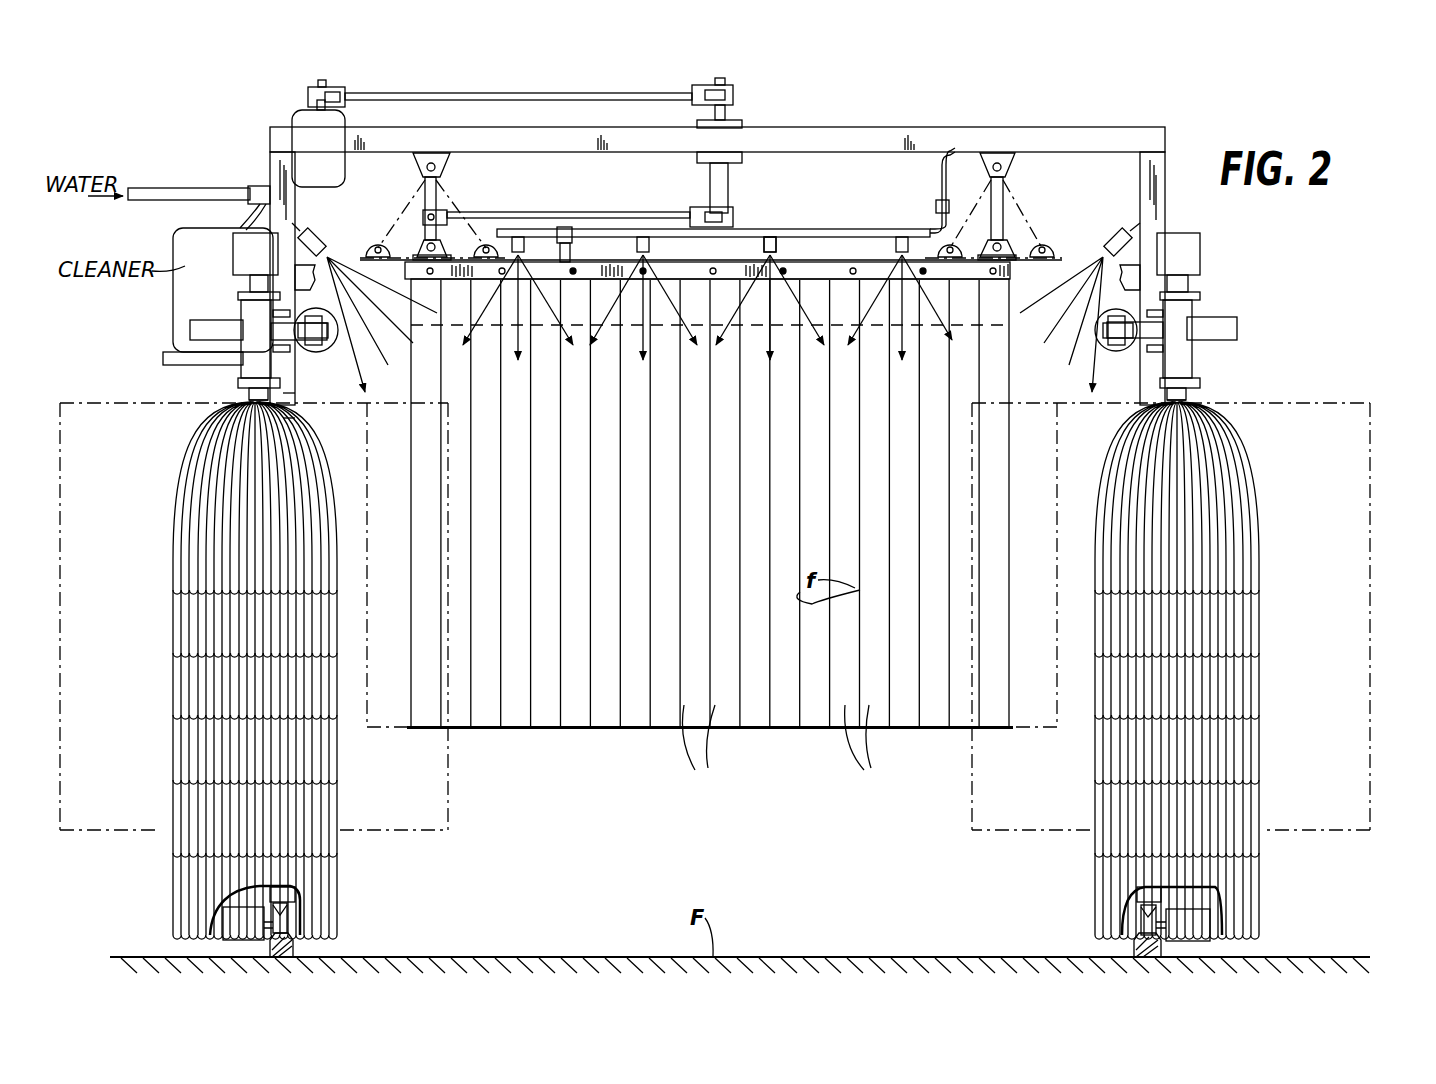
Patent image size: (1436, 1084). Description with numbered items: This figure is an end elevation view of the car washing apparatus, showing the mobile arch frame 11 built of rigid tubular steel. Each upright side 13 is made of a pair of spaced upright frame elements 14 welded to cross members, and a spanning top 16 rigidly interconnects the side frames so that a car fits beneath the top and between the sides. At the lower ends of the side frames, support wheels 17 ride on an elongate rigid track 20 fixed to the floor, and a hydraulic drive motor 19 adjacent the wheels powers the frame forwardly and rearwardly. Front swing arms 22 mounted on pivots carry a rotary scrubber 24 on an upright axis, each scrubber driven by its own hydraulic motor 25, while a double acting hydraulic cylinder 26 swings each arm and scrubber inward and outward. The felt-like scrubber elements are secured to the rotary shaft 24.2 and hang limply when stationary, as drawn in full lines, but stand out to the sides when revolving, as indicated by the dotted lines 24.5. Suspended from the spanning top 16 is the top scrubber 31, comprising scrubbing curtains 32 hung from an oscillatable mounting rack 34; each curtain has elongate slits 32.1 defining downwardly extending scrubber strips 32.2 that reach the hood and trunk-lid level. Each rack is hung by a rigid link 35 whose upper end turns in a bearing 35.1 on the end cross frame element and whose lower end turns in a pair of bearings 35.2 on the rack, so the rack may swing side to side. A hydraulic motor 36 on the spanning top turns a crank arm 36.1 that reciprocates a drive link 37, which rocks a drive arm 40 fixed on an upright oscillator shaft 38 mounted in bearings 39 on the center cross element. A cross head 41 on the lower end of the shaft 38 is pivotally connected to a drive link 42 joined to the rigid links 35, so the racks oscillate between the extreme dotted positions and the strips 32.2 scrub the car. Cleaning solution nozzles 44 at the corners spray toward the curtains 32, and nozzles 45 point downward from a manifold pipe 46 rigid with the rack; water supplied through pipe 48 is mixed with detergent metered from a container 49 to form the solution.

The mobile arch frame 11 is at (1148, 124).
The upright side 13 is at (287, 395).
The upright frame element 14 is at (290, 420).
The spanning top 16 is at (905, 127).
The support wheel 17 is at (290, 922).
The hydraulic drive motor 19 is at (225, 919).
The elongate rigid track 20 is at (295, 955).
The front swing arm 22 is at (200, 331).
The rotary scrubber 24 is at (190, 466).
The rotary shaft 24.2 is at (250, 398).
The dotted lines 24.5 is at (1375, 426).
The hydraulic motor 25 is at (232, 250).
The double acting hydraulic cylinder 26 is at (318, 347).
The top scrubber 31 is at (1017, 450).
The scrubbing curtain 32 is at (726, 288).
The elongate slit 32.1 is at (717, 743).
The scrubber strip 32.2 is at (883, 743).
The oscillatable mounting rack 34 is at (825, 270).
The rigid link 35 is at (437, 212).
The bearing 35.1 is at (445, 160).
The bearing 35.2 is at (378, 248).
The hydraulic motor 36 is at (293, 120).
The crank arm 36.1 is at (322, 90).
The reciprocating drive link 37 is at (550, 93).
The upright oscillator shaft 38 is at (710, 190).
The bearing 39 is at (742, 122).
The drive arm 40 is at (733, 92).
The cross head 41 is at (733, 212).
The drive link 42 is at (605, 212).
The cleaning solution nozzle 44 is at (327, 240).
The nozzle 45 is at (773, 240).
The manifold pipe 46 is at (900, 237).
The pipe 48 is at (192, 188).
The container 49 is at (175, 303).